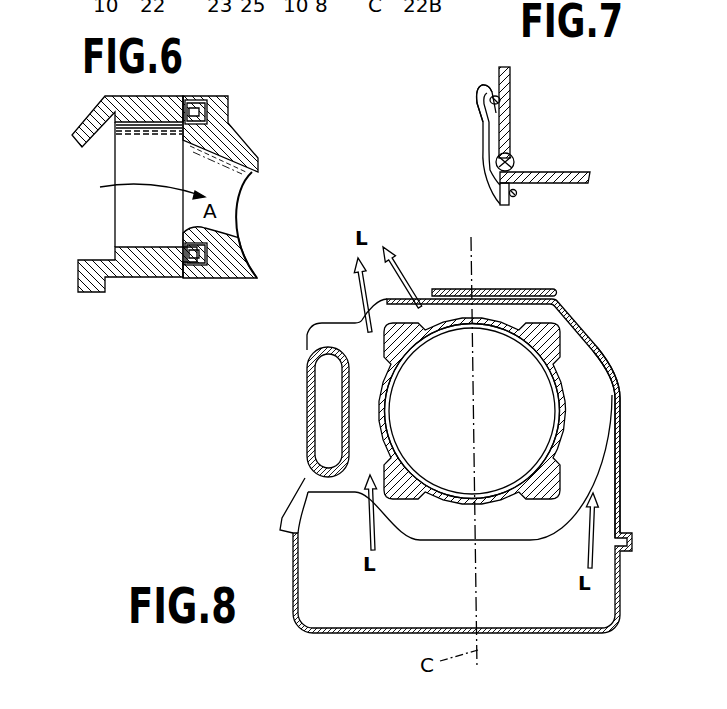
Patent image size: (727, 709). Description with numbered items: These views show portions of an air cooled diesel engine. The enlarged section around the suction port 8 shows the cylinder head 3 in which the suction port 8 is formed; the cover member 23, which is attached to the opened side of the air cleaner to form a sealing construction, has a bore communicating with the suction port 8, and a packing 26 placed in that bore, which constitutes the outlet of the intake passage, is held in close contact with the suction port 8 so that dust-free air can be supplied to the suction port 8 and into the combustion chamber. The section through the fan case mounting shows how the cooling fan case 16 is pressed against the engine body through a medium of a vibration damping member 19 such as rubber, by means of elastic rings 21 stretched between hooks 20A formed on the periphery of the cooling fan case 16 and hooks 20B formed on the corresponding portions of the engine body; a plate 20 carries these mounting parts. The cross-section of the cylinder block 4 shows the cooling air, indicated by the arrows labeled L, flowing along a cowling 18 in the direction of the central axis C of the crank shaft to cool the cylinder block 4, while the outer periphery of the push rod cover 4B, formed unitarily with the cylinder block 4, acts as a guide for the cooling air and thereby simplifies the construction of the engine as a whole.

In FIG. 6, the cylinder head 3 is at (233, 138).
In FIG. 8, the cylinder block 4 is at (553, 322).
In FIG. 8, the push rod cover 4B is at (308, 365).
In FIG. 6, the suction port 8 is at (242, 183).
In FIG. 6, the cooling fan case 16 is at (97, 117).
In FIG. 7, the cooling fan case 16 is at (510, 103).
In FIG. 8, the cooling fan case 16 is at (622, 603).
In FIG. 8, the cowling 18 is at (622, 405).
In FIG. 7, the vibration damping member 19 is at (512, 158).
In FIG. 7, the bottom plate 20 is at (550, 172).
In FIG. 7, the hooks 20A is at (480, 96).
In FIG. 7, the hooks 20B is at (500, 200).
In FIG. 7, the elastic rings 21 is at (483, 147).
In FIG. 6, the cover member 23 is at (135, 119).
In FIG. 6, the packing 26 is at (208, 112).